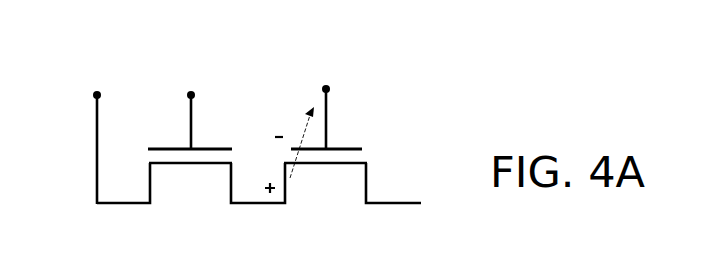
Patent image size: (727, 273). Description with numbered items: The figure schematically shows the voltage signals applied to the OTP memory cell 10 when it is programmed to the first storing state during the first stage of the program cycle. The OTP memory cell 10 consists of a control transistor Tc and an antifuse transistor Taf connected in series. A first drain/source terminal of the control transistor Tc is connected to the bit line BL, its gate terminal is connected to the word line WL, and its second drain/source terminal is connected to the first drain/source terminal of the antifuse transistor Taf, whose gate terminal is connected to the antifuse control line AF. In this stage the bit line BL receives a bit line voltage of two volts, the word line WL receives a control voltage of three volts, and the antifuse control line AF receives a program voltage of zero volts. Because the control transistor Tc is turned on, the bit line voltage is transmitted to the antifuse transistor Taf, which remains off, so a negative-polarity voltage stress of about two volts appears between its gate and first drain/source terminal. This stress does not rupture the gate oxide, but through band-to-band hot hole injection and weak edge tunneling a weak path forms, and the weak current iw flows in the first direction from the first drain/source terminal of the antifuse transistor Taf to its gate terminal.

The OTP memory cell 10 is at (415, 88).
The bit line BL is at (84, 116).
The word line WL is at (202, 88).
The antifuse control line AF is at (336, 84).
The control transistor Tc is at (190, 191).
The antifuse transistor Taf is at (325, 189).
The weak current iw is at (296, 135).